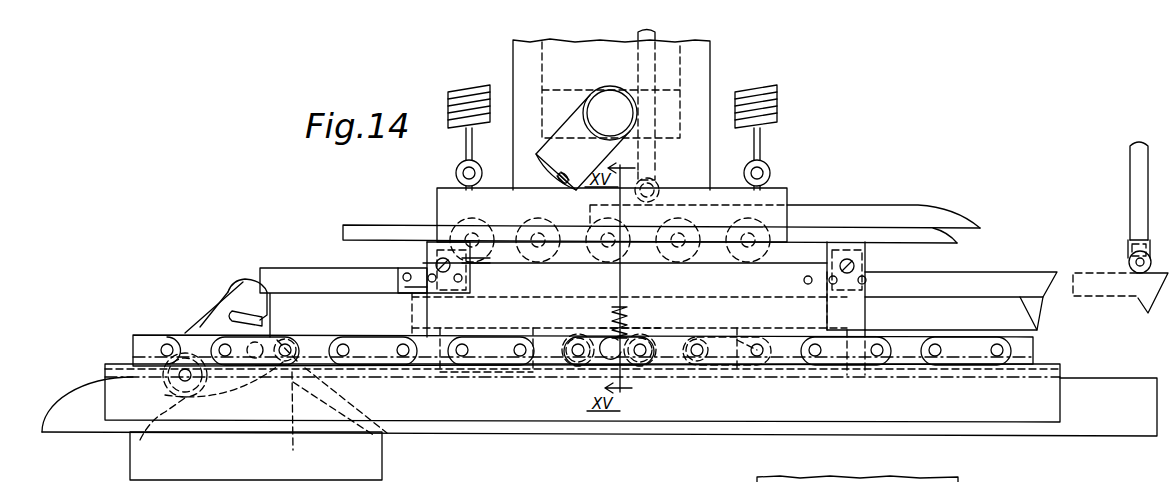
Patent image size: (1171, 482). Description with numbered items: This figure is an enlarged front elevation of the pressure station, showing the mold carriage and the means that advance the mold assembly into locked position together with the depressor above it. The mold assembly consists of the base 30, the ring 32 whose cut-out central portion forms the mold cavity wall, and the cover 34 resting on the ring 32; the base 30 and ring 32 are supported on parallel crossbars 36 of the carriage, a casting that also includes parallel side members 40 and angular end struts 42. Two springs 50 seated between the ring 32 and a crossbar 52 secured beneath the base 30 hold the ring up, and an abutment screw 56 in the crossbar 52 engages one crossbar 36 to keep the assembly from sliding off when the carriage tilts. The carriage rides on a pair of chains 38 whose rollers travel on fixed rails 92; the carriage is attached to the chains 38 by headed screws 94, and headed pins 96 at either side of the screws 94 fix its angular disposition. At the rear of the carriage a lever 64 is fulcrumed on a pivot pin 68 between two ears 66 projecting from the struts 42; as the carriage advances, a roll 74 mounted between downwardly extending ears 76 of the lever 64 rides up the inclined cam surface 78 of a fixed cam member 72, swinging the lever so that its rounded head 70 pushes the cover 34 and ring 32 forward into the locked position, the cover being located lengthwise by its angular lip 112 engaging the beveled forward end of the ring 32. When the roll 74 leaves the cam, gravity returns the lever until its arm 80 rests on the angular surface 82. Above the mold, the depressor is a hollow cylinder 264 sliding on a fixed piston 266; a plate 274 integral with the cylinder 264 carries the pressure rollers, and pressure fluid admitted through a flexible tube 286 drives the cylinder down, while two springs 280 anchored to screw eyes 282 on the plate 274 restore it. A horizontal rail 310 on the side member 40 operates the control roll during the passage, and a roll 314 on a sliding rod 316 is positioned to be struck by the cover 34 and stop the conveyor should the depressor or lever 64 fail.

The hollow cylinder 264 is at (703, 56).
The fixed piston 266 is at (670, 90).
The plate 274 is at (787, 195).
The springs 280 is at (452, 100).
The screw eyes 282 is at (455, 171).
The flexible tube 286 is at (567, 135).
The horizontal rail 310 is at (920, 212).
The roll 314 is at (1131, 258).
The sliding rod 316 is at (1135, 178).
The angular lip 112 is at (1045, 298).
The cover 34 is at (360, 280).
The ring 32 is at (390, 307).
The angular end struts 42 is at (332, 328).
The head 70 is at (245, 287).
The ears 66 is at (227, 332).
The lever 64 is at (200, 327).
The pivot pin 68 is at (280, 330).
The roll 74 is at (163, 392).
The ears 76 is at (190, 398).
The cam surface 78 is at (140, 440).
The arm 80 is at (292, 421).
The angular surface 82 is at (310, 374).
The cam member 72 is at (382, 457).
The base 30 is at (533, 290).
The headed screws 94 is at (603, 340).
The springs 50 is at (630, 320).
The crossbar 52 is at (632, 333).
The abutment screw 56 is at (740, 340).
The crossbars 36 is at (520, 374).
The chains 38 is at (949, 393).
The rails 92 is at (1050, 410).
The side members 40 is at (853, 318).
The headed pins 96 is at (578, 356).